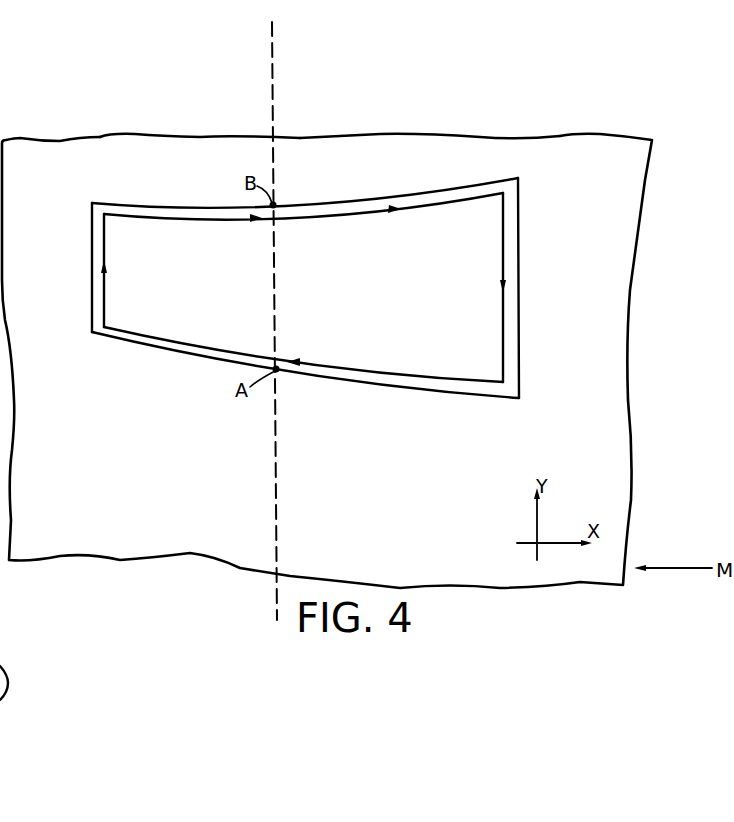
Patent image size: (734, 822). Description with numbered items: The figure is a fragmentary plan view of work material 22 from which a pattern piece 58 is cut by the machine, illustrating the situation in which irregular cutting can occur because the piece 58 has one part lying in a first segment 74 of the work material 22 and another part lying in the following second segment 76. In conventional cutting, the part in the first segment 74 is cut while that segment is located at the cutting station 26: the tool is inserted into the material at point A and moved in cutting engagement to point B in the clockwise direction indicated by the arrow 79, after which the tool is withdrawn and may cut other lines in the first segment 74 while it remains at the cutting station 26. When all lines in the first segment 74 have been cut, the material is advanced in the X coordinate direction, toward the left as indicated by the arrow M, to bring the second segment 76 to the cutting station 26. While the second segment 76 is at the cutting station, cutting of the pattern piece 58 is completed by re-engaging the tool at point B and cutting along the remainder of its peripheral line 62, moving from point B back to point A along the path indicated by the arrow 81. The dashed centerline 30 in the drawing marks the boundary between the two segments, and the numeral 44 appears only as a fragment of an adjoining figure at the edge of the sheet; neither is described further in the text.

The work material 22 is at (598, 149).
The cutting station 26 is at (305, 240).
The centerline 30 is at (270, 52).
The pattern piece 58 is at (438, 383).
The peripheral line 62 is at (372, 197).
The first segment 74 is at (136, 153).
The second segment 76 is at (452, 143).
The arrow 79 is at (105, 292).
The arrow 81 is at (477, 198).
The adjacent figure element (partial) 44 is at (13, 698).